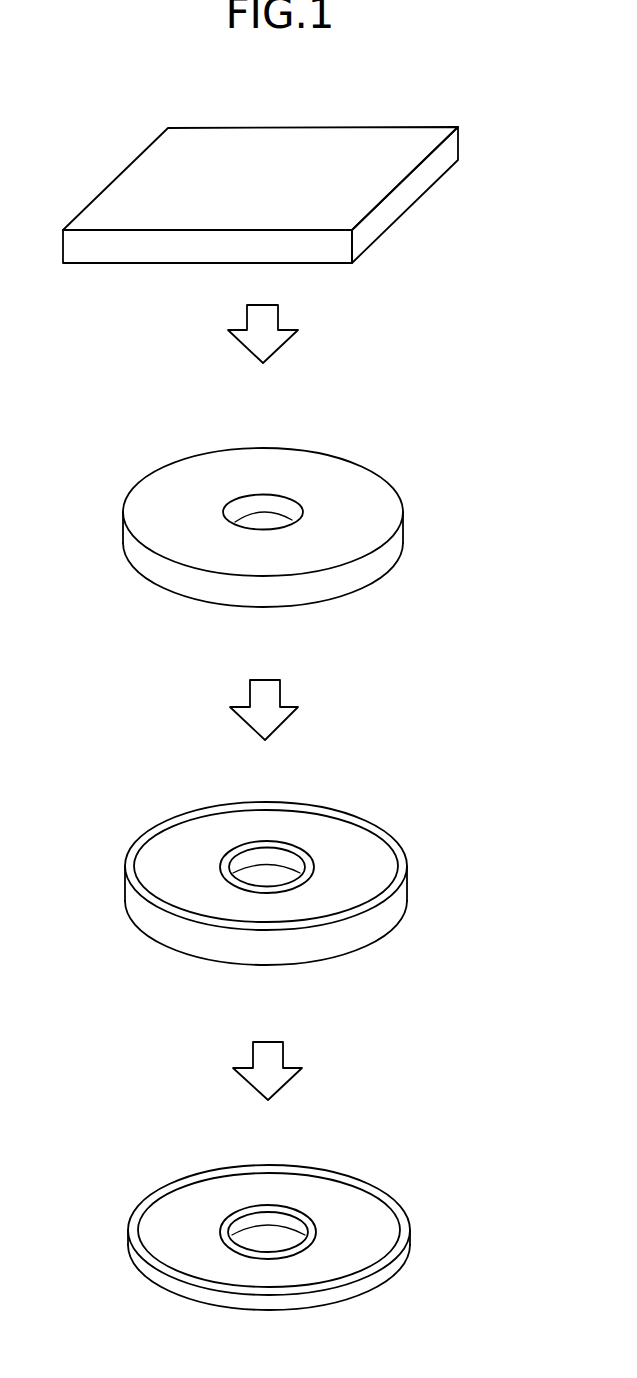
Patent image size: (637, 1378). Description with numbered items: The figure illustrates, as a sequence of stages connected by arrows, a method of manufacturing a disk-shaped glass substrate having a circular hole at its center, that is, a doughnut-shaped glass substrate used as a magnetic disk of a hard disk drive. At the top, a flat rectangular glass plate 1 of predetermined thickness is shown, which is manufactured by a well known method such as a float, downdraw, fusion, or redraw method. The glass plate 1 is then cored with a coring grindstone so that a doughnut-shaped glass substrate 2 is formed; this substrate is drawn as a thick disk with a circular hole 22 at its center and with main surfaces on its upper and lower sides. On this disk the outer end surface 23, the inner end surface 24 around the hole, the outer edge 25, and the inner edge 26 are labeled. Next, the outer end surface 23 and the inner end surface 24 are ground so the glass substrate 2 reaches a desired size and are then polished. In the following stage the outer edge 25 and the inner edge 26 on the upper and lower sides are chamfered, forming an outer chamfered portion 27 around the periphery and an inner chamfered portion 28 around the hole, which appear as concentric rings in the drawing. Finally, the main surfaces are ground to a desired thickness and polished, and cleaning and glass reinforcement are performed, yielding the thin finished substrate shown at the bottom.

The glass plate 1 is at (403, 98).
The glass substrate 2 is at (297, 502).
The circular hole 22 is at (250, 518).
The outer end surface 23 is at (393, 550).
The inner end surface 24 is at (262, 505).
The outer edge 25 is at (317, 570).
The inner edge 26 is at (285, 497).
The outer chamfered portion 27 is at (285, 862).
The inner chamfered portion 28 is at (288, 852).